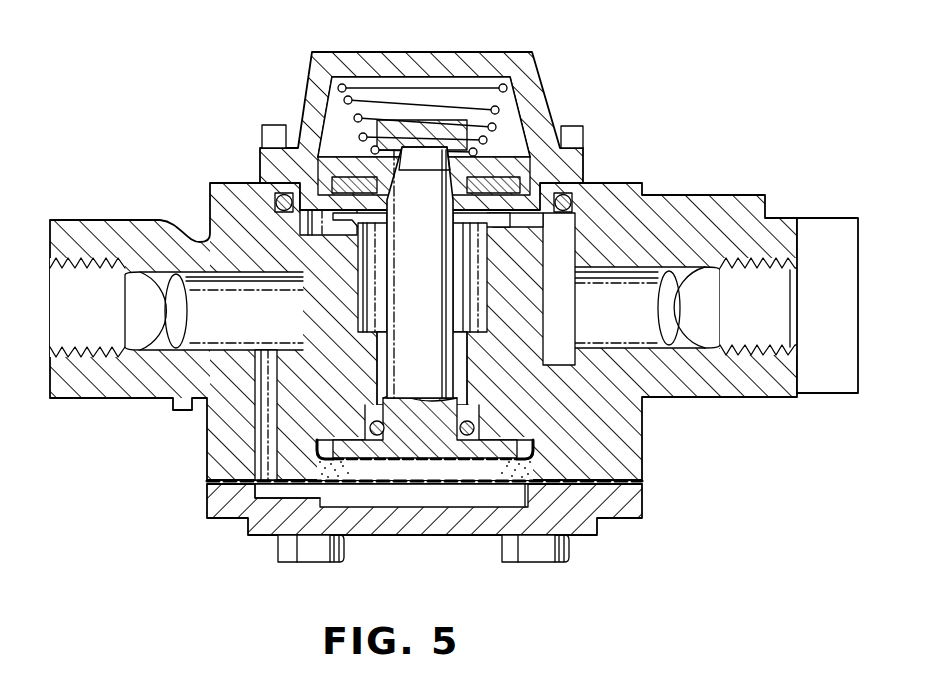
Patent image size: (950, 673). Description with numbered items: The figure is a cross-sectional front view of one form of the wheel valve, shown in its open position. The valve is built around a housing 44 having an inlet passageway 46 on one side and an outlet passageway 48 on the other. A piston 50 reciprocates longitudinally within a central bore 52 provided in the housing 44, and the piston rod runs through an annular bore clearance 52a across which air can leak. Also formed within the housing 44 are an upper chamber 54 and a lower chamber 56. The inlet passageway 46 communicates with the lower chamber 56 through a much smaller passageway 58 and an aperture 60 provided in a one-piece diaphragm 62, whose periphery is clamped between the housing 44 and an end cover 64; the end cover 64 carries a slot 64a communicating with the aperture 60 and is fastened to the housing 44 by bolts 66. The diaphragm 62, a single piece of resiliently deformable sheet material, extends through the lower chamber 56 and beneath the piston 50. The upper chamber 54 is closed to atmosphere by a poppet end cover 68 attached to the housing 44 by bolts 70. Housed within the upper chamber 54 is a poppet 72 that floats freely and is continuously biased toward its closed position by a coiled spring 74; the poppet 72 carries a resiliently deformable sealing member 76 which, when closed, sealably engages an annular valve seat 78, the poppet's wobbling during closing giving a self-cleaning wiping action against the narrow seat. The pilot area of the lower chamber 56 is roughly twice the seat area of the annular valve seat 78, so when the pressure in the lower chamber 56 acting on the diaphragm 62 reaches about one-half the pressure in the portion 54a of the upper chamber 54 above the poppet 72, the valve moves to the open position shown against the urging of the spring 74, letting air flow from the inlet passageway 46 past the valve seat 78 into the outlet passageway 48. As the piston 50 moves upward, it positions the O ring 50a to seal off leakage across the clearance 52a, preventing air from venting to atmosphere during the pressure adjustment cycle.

The housing 44 is at (746, 189).
The inlet passageway 46 is at (108, 250).
The outlet passageway 48 is at (770, 277).
The piston 50 is at (430, 317).
The O ring 50a is at (470, 427).
The central bore 52 is at (455, 381).
The annular bore clearance 52a is at (379, 373).
The upper chamber 54 is at (518, 207).
The portion of upper chamber 54a is at (342, 116).
The lower chamber 56 is at (404, 495).
The passageway 58 is at (262, 437).
The aperture 60 is at (262, 485).
The diaphragm 62 is at (228, 473).
The end cover 64 is at (644, 500).
The slot 64a is at (290, 490).
The bolts 66 is at (327, 563).
The poppet end cover 68 is at (541, 71).
The bolts 70 is at (263, 137).
The poppet 72 is at (417, 146).
The coiled spring 74 is at (507, 110).
The sealing member 76 is at (333, 180).
The annular valve seat 78 is at (365, 228).